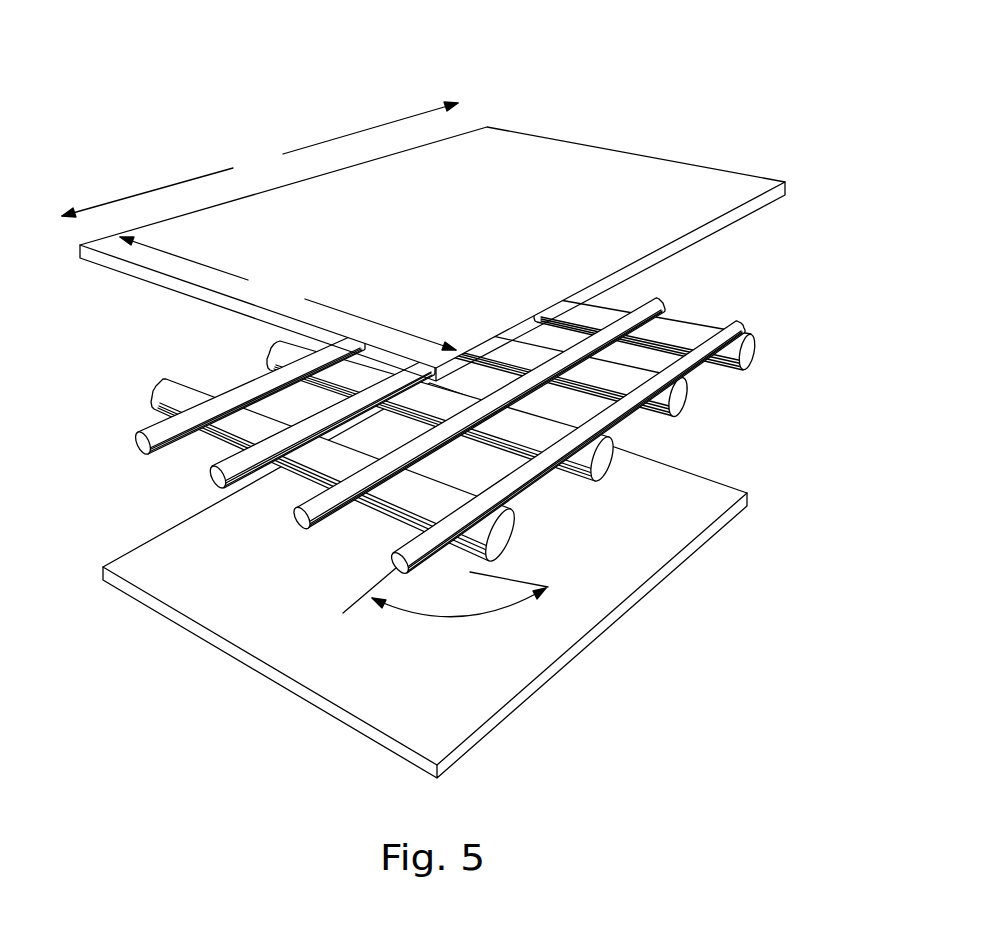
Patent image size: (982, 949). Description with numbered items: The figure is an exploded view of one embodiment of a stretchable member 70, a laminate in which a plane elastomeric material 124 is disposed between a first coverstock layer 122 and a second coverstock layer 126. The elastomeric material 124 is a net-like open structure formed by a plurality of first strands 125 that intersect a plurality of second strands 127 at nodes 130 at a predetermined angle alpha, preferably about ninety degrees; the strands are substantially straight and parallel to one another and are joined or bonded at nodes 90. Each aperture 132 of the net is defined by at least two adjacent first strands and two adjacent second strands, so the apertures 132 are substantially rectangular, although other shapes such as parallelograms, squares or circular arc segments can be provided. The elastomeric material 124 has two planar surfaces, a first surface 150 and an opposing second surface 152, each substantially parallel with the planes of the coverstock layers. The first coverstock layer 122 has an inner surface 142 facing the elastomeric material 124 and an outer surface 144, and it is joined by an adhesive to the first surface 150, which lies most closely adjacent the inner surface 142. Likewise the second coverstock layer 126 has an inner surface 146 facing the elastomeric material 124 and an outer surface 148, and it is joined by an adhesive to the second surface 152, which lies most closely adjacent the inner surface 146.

The stretchable member 70 is at (444, 396).
The outer surface of second coverstock layer 148 is at (421, 234).
The second coverstock layer 126 is at (421, 234).
The inner surface of second coverstock layer 146 is at (157, 284).
The plane elastomeric material 124 is at (452, 411).
The second surface 152 is at (681, 357).
The first surface 150 is at (717, 370).
The inner surface of first coverstock layer 142 is at (457, 580).
The outer surface of first coverstock layer 144 is at (682, 578).
The first coverstock layer 122 is at (444, 580).
The first strands 125 is at (535, 488).
The second strands 127 is at (451, 439).
The nodes 90 is at (451, 439).
The apertures 132 is at (451, 439).
The nodes 130 is at (230, 388).